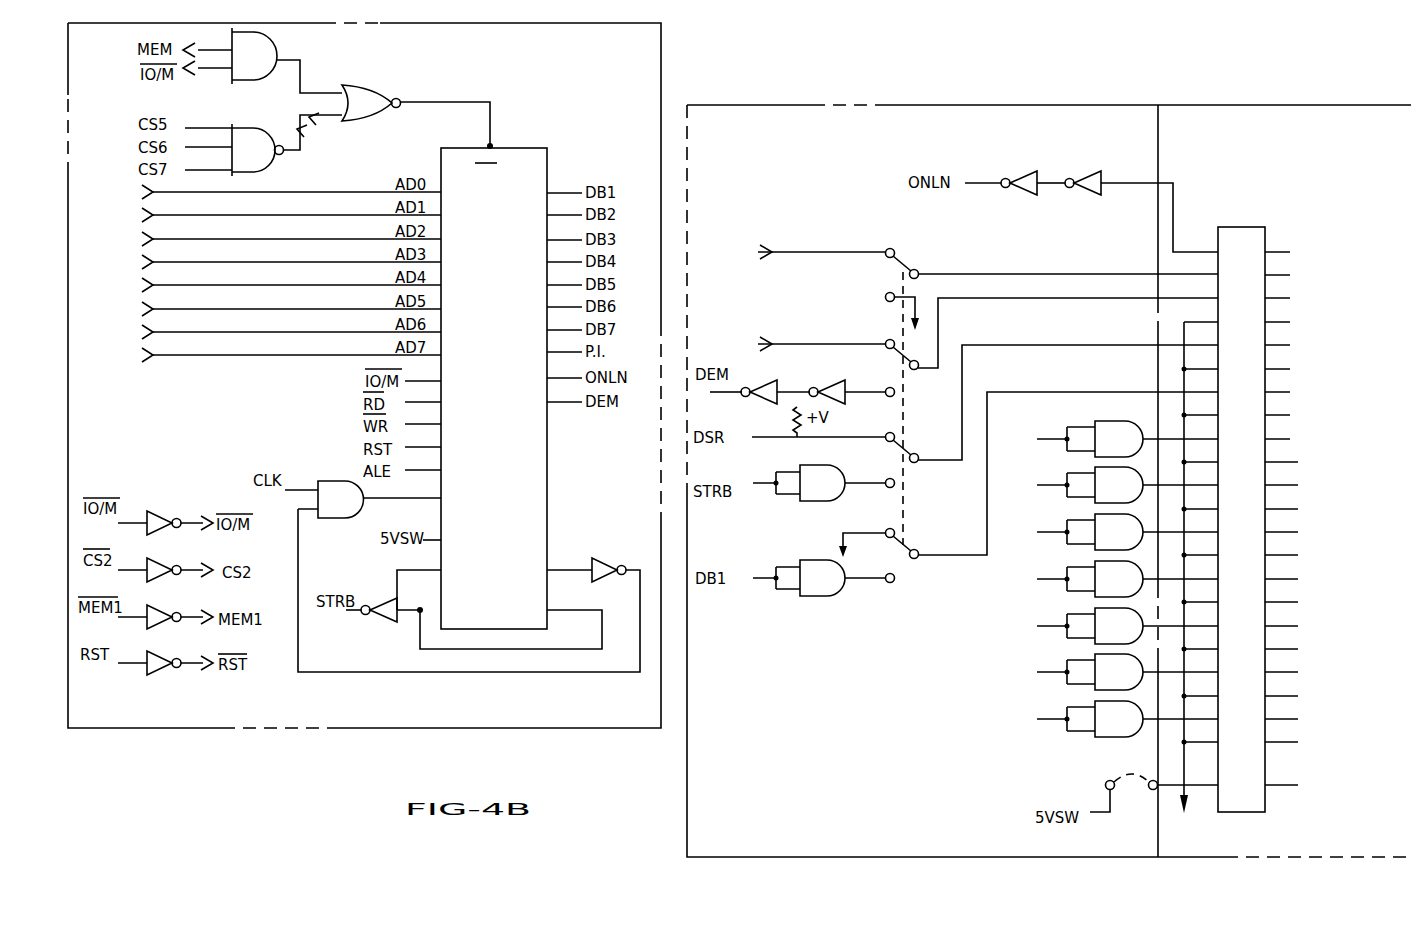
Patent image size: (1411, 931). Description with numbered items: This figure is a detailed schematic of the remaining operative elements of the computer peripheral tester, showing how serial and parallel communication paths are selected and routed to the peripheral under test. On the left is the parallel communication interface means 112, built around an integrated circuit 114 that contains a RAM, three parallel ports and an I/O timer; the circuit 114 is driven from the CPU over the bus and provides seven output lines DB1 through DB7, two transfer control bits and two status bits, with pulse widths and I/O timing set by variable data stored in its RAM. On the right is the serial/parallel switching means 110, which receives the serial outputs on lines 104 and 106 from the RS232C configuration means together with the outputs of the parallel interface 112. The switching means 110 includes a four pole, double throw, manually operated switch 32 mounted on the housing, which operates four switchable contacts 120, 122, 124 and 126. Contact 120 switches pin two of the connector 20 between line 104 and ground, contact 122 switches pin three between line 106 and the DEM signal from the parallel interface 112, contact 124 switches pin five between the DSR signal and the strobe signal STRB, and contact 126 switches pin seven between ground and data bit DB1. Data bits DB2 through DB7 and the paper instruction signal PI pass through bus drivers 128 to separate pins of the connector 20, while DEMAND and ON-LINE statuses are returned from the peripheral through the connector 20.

The connector 20 is at (1270, 192).
The four pole double throw manually operated switch 32 is at (900, 282).
The output line 104 is at (758, 252).
The output line 106 is at (757, 338).
The serial/parallel switching means 110 is at (707, 175).
The parallel communication interface means 112 is at (635, 528).
The integrated circuit 114 is at (537, 495).
The switchable contact 120 is at (923, 268).
The switchable contact 122 is at (910, 350).
The switchable contact 124 is at (906, 448).
The switchable contact 126 is at (908, 540).
The bus drivers 128 is at (1112, 464).